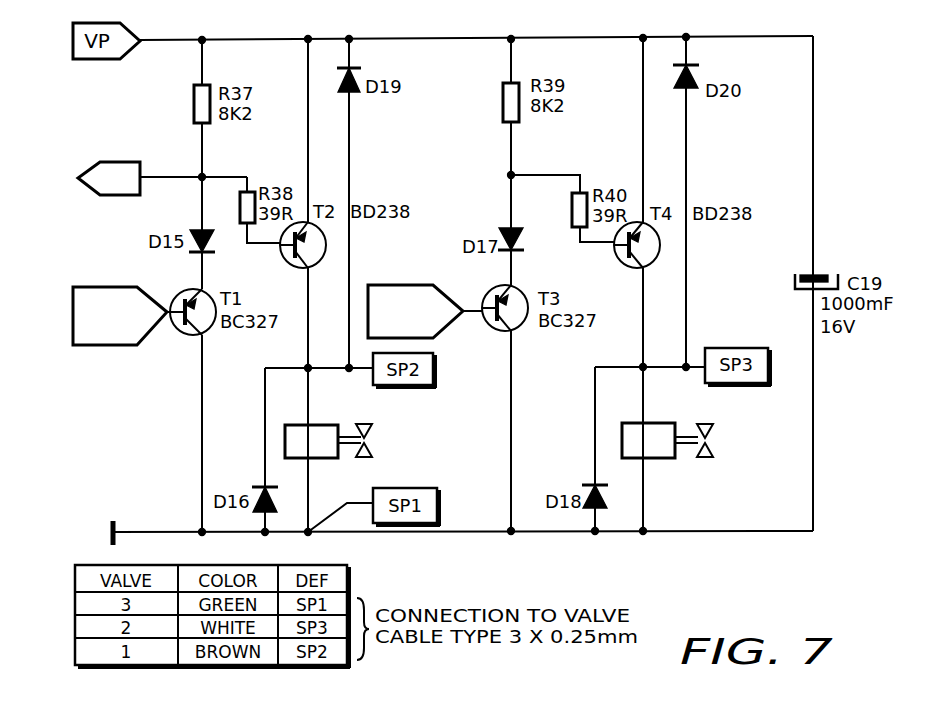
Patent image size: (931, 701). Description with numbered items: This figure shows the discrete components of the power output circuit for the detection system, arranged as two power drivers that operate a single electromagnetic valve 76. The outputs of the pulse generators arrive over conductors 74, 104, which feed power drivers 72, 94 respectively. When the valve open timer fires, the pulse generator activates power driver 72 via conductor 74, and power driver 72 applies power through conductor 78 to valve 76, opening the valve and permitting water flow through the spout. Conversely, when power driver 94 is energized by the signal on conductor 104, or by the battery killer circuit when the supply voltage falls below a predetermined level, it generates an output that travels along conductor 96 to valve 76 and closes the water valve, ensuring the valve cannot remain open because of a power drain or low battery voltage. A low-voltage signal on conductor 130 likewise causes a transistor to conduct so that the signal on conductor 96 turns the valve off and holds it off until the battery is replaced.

The thyristor request (Q) input line 130 is at (192, 140).
The conductor 104 is at (167, 315).
The conductor 74 is at (470, 313).
The conductor 96 is at (326, 390).
The electromagnetic valve 76 is at (327, 459).
The conductor 78 is at (661, 390).
The power driver 94 is at (365, 540).
The power driver 72 is at (483, 540).